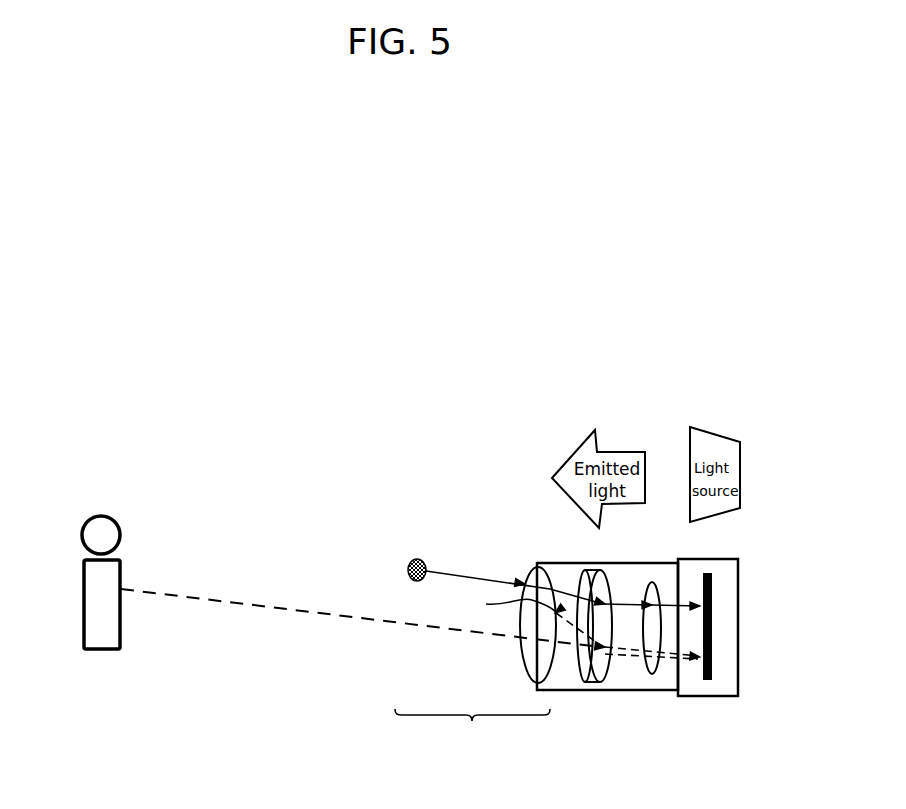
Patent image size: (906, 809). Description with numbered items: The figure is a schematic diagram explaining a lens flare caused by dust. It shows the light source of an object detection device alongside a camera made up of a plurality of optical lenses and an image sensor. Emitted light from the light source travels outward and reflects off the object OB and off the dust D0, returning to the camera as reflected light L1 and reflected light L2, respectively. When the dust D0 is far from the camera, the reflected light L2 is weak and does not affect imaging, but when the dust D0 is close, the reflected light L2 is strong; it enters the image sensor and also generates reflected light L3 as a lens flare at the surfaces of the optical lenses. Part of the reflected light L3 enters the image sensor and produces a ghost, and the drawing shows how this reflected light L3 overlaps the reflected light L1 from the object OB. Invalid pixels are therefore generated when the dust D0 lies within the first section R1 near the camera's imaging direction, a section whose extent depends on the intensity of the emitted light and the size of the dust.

The object OB is at (121, 573).
The reflected light L1 is at (228, 602).
The reflected light L2 is at (480, 579).
The reflected light L3 is at (511, 603).
The dust D0 is at (418, 558).
The first section R1 is at (472, 729).